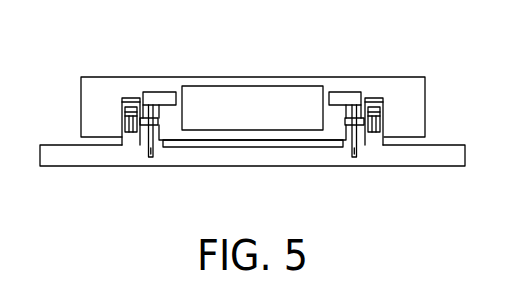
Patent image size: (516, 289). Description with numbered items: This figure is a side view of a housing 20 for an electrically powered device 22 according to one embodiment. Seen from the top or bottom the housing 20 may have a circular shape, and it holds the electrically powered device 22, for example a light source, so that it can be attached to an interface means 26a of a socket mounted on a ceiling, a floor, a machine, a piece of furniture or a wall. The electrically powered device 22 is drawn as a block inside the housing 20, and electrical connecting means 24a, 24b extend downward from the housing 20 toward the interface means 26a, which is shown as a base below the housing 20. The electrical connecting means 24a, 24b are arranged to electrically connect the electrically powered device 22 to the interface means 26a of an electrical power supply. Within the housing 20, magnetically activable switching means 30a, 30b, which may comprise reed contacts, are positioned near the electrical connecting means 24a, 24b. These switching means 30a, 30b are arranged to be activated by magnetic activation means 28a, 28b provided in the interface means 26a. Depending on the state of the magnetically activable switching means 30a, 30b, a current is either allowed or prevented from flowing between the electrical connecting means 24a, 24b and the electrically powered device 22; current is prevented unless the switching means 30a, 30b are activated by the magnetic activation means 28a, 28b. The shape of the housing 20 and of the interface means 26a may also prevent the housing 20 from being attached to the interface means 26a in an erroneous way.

The housing 20 is at (230, 77).
The electrically powered device 22 is at (264, 86).
The electrical connecting means 24a is at (147, 140).
The electrical connecting means 24b is at (357, 141).
The interface means 26a is at (259, 168).
The magnetic activation means 28a is at (128, 118).
The magnetic activation means 28b is at (378, 118).
The magnetically activable switching means 30a is at (158, 92).
The magnetically activable switching means 30b is at (343, 92).